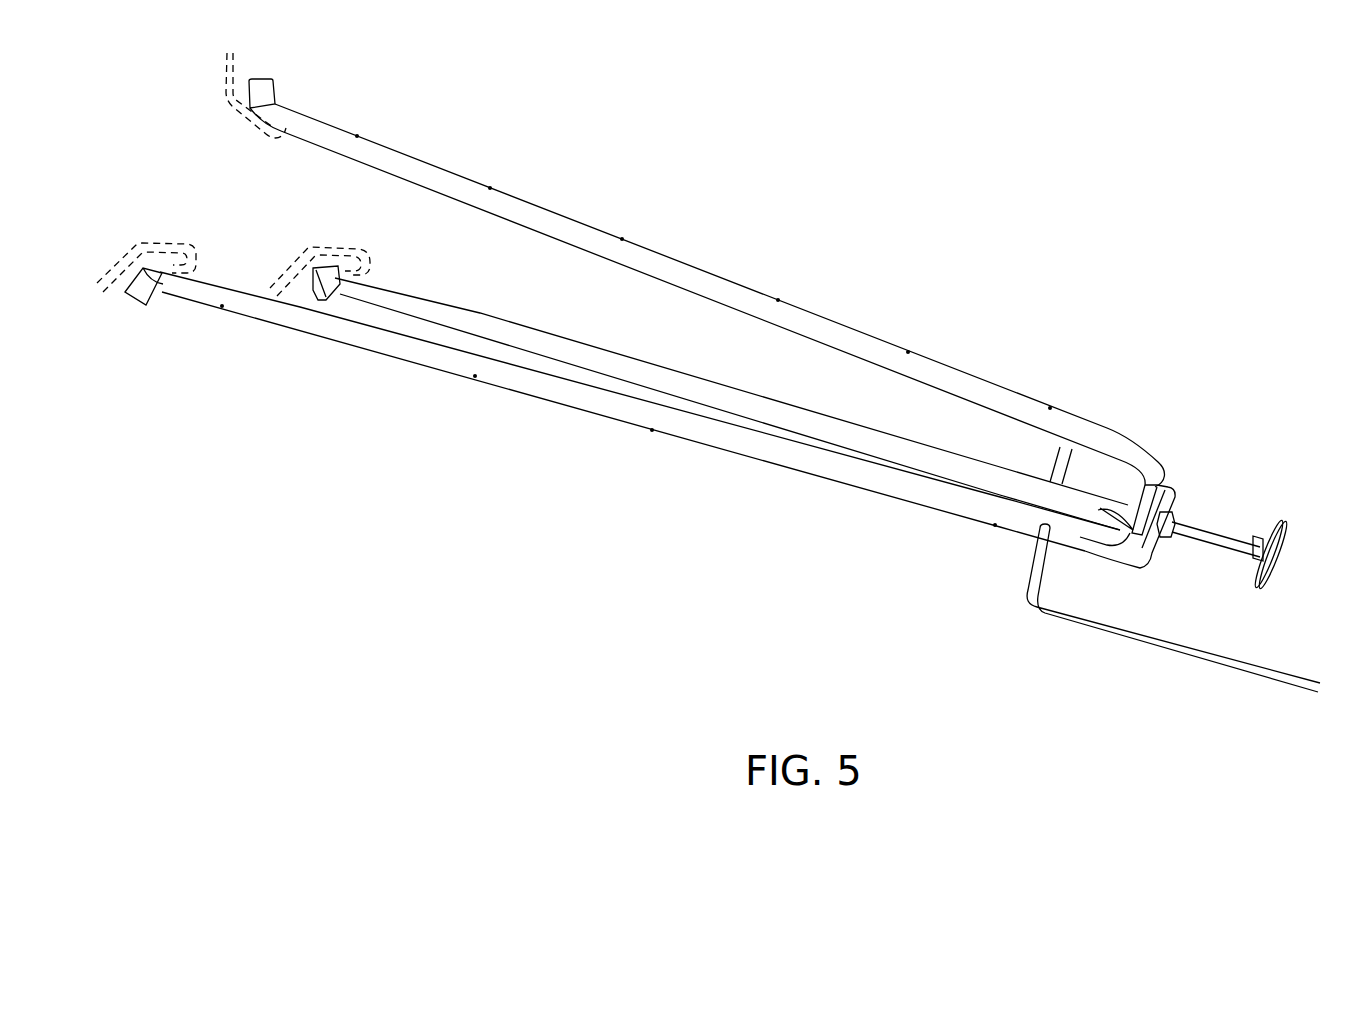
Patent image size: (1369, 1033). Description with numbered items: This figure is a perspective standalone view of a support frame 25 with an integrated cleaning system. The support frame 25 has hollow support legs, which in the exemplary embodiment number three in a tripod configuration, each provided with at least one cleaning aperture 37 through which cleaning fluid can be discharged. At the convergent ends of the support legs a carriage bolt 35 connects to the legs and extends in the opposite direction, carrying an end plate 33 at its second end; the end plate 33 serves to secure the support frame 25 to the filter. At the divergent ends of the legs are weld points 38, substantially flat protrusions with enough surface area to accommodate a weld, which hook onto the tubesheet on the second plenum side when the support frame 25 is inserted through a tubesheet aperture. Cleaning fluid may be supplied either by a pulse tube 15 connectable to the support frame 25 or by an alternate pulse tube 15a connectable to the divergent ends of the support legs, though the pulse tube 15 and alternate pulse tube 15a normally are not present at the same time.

The pulse tube 15 is at (1163, 648).
The alternate pulse tube 15a is at (226, 74).
The support frame 25 is at (722, 280).
The end plate 33 is at (1285, 540).
The carriage bolt 35 is at (1215, 535).
The cleaning aperture 37 is at (908, 352).
The weld point 38 is at (143, 290).